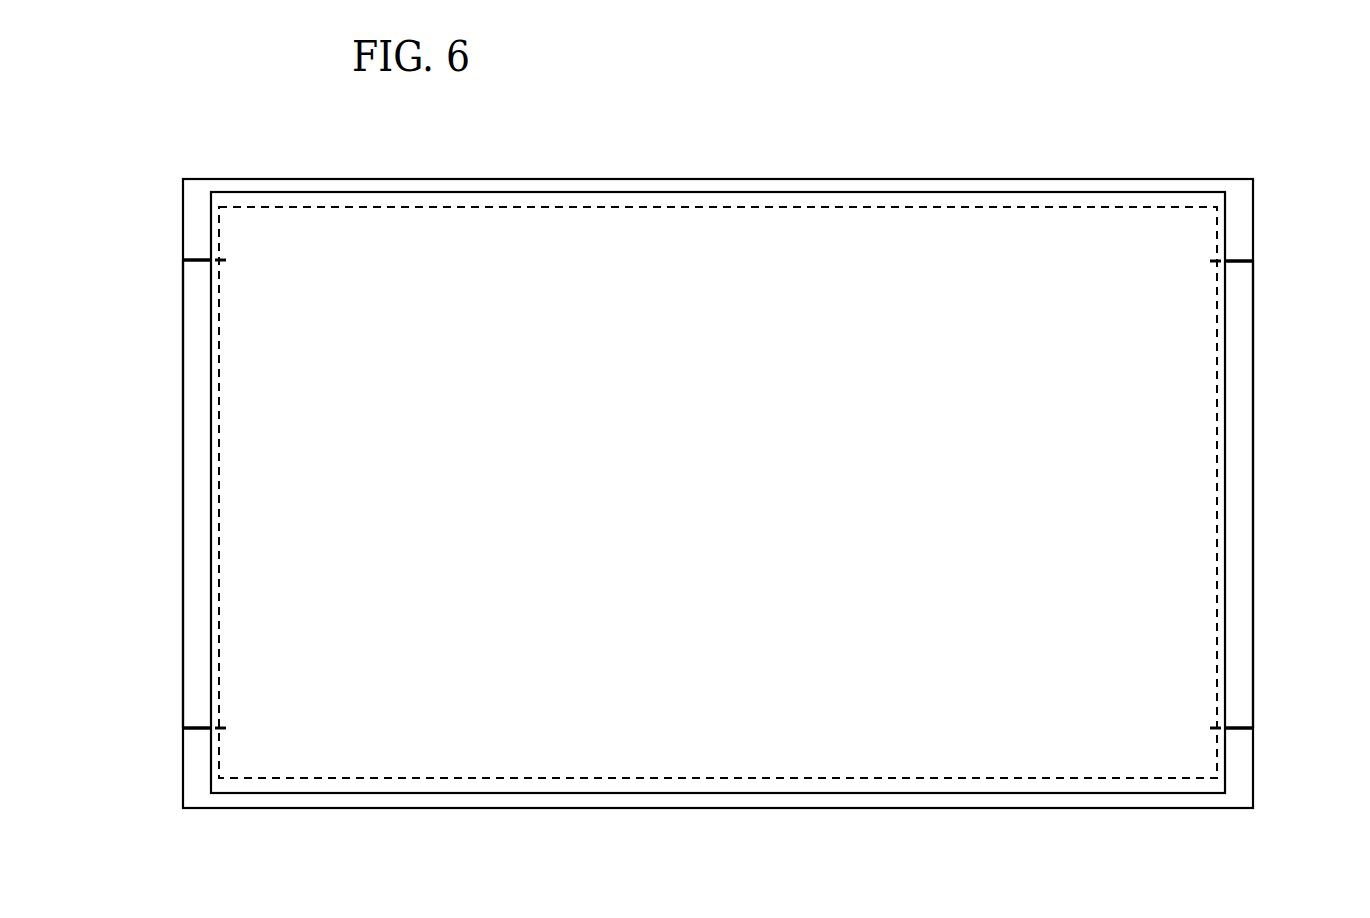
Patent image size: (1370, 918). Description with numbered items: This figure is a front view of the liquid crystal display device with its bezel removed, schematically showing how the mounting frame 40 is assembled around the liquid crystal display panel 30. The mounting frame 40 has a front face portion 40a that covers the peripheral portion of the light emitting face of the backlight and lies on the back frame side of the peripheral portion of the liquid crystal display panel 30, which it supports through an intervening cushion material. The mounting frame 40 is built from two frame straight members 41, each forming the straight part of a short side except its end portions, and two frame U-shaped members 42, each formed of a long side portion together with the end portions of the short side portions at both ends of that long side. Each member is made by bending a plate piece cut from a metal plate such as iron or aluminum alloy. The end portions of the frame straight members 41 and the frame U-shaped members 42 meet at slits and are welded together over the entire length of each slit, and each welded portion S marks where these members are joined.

The liquid crystal display panel 30 is at (691, 511).
The mounting frame 40 is at (947, 180).
The front face portion 40a is at (880, 192).
The frame straight member 41 is at (183, 476).
The frame U-shaped member 42 is at (760, 180).
The welded portion S is at (190, 259).